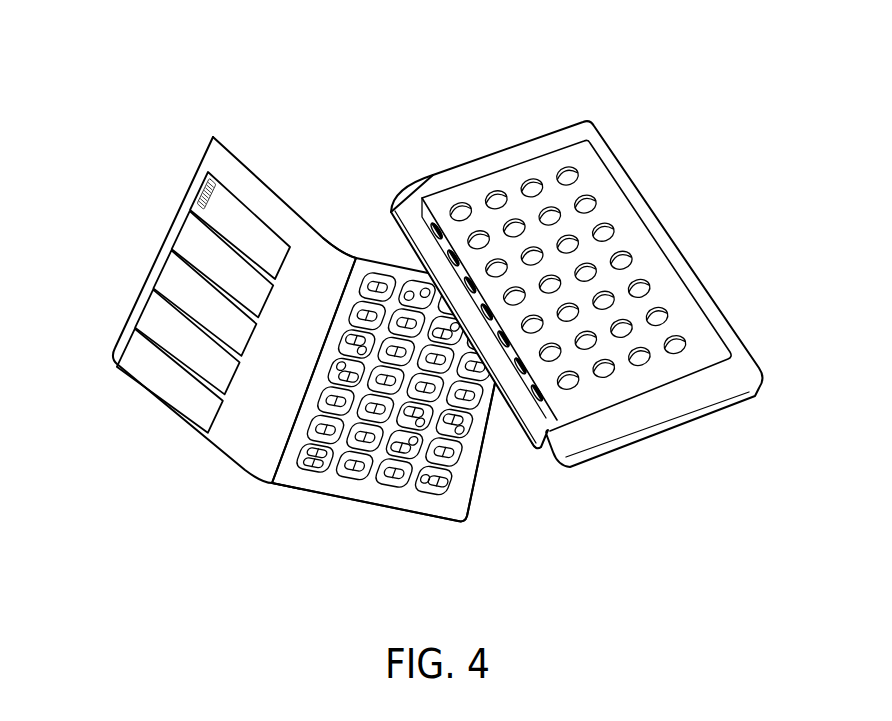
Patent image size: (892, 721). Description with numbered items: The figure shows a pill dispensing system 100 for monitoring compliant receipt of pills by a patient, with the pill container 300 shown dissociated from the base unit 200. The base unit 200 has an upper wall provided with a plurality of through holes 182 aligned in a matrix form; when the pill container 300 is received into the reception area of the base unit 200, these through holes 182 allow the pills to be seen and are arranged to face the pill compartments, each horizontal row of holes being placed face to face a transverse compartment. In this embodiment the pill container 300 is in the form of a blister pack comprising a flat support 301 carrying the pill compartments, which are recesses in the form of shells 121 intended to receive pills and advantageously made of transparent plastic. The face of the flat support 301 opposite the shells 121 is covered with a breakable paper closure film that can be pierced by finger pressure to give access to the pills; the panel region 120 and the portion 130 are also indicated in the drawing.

The pill dispensing system 100 is at (577, 258).
The base unit 200 is at (656, 185).
The pill container 300 is at (292, 378).
The keypad panel 120 is at (409, 438).
The shells 121 is at (466, 457).
The hinge portion 130 is at (361, 254).
The through holes 182 is at (608, 375).
The flat support 301 is at (303, 490).